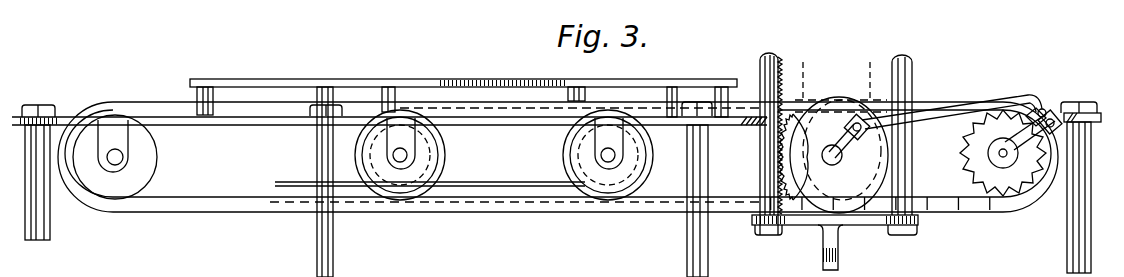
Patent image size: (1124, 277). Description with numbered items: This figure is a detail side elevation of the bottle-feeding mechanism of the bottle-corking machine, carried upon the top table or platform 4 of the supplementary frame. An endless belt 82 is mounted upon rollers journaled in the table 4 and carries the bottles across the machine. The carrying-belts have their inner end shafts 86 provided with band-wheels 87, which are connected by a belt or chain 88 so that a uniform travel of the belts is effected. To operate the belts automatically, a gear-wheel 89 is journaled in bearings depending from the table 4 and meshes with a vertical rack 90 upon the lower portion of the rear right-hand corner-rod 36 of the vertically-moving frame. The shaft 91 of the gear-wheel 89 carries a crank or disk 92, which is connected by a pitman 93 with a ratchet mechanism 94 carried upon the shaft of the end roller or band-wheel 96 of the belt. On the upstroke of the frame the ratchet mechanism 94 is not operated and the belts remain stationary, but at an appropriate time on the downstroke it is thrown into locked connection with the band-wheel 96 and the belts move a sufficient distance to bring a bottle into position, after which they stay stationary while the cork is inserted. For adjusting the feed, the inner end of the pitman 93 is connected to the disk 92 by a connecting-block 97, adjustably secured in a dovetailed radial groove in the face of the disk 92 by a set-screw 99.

The top table or platform 4 is at (172, 120).
The rear right-hand corner-rod 36 is at (778, 56).
The endless belt 82 is at (558, 157).
The inner end shaft 86 is at (408, 155).
The band-wheel 87 is at (405, 185).
The belt or chain 88 is at (517, 187).
The gear-wheel 89 is at (793, 157).
The vertical rack 90 is at (778, 80).
The shaft 91 is at (845, 161).
The crank or disk 92 is at (842, 150).
The pitman 93 is at (942, 100).
The ratchet mechanism 94 is at (1046, 108).
The end roller or band-wheel 96 is at (958, 154).
The connecting-block 97 is at (863, 136).
The set-screw 99 is at (836, 140).